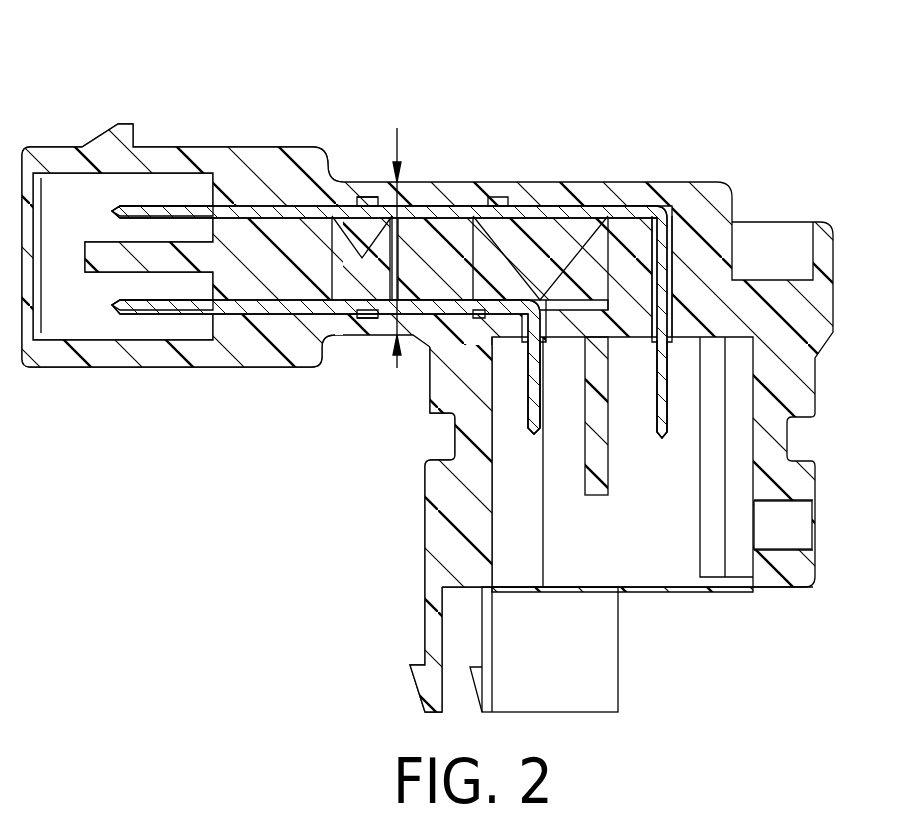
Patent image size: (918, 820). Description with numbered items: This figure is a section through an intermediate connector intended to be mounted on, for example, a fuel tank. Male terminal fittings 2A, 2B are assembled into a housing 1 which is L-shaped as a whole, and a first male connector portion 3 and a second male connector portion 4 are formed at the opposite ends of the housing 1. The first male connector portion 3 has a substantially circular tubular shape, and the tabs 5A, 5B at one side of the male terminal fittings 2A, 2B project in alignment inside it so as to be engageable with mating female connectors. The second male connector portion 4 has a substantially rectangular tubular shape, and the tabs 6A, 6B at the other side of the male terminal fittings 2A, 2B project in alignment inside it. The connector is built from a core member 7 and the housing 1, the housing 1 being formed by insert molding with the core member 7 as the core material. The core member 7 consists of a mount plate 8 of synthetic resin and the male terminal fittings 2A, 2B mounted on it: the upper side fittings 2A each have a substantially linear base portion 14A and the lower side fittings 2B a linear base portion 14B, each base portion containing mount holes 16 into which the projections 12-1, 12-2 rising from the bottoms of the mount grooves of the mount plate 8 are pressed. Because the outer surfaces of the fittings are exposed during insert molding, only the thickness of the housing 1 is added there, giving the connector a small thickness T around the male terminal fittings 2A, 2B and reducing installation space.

The housing 1 is at (427, 415).
The first male connector portion 3 is at (672, 565).
The second male connector portion 4 is at (107, 357).
The tab 5A is at (668, 404).
The tab 5B is at (523, 430).
The tab 6A is at (160, 206).
The tab 6B is at (153, 312).
The core member 7 is at (612, 198).
The mount plate 8 is at (563, 237).
The projections 12-1 is at (357, 314).
The projections 12-2 is at (508, 183).
The base portion 14A is at (301, 207).
The base portion 14B is at (455, 320).
The mount holes 16 is at (372, 186).
The male terminal fittings 2A is at (455, 183).
The male terminal fittings 2B is at (432, 305).
The thickness T is at (384, 182).